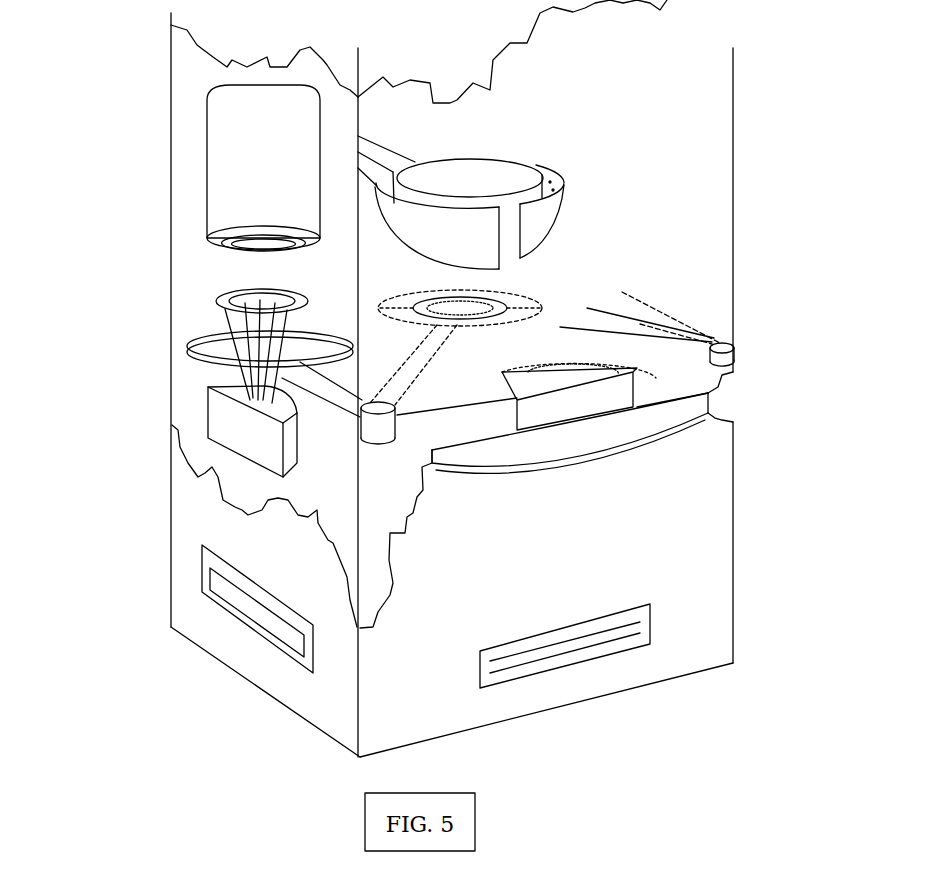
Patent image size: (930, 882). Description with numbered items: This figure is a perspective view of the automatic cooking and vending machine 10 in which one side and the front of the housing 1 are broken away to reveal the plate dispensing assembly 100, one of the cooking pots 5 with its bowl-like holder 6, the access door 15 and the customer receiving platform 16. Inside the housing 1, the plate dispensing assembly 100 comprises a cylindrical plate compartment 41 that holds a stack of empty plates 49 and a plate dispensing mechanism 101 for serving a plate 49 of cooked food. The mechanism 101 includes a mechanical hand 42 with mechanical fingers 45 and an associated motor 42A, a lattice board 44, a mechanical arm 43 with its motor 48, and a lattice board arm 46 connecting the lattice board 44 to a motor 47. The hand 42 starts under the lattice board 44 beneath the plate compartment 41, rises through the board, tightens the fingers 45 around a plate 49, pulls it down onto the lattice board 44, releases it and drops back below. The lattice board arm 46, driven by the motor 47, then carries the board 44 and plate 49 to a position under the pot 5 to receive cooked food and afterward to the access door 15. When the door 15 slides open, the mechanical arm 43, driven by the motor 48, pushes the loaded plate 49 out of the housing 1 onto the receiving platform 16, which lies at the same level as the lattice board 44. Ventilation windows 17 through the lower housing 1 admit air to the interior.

The housing 1 is at (715, 532).
The automatic cooking and vending machine 10 is at (188, 713).
The ventilation windows 17 is at (263, 600).
The cylindrical plate compartment 41 is at (227, 162).
The mechanical hand 42 is at (220, 318).
The mechanical fingers 45 is at (297, 316).
The lattice board 44 is at (207, 348).
The motor 42A is at (227, 423).
The plate dispensing assembly 100 is at (116, 355).
The lattice board arm 46 is at (333, 398).
The motor 47 is at (378, 422).
The plate dispensing mechanism 101 is at (370, 472).
The pot 5 is at (490, 178).
The bowl 6 is at (498, 248).
The plate 49 is at (545, 298).
The mechanical arm 43 is at (662, 330).
The motor 48 is at (735, 348).
The receiving platform 16 is at (657, 420).
The access door 15 is at (567, 402).